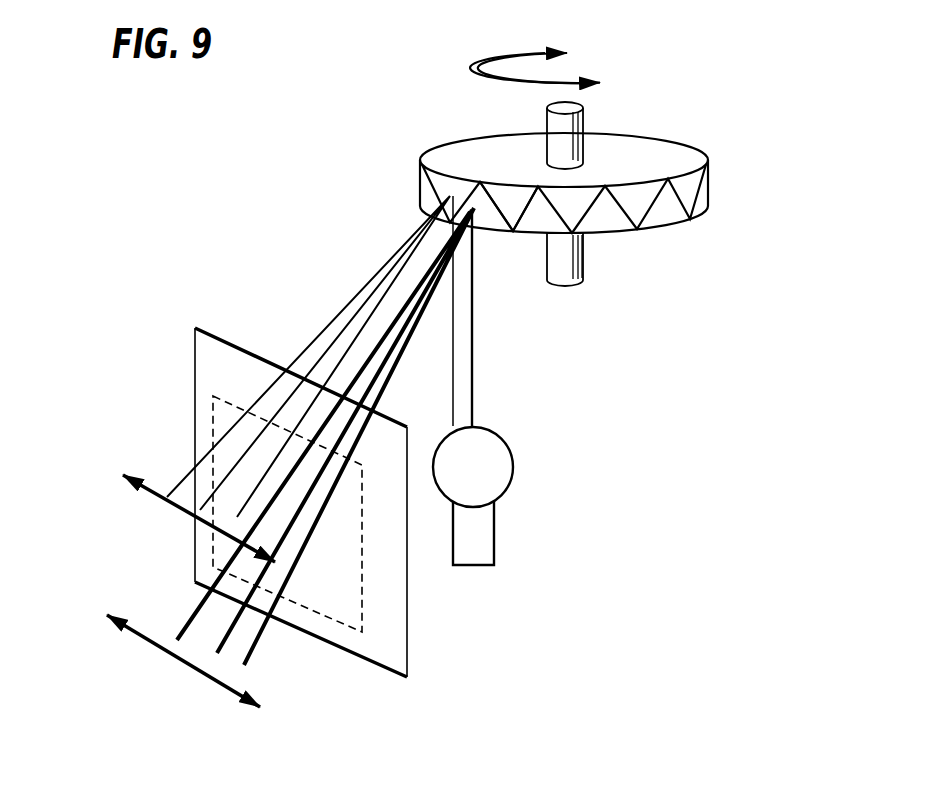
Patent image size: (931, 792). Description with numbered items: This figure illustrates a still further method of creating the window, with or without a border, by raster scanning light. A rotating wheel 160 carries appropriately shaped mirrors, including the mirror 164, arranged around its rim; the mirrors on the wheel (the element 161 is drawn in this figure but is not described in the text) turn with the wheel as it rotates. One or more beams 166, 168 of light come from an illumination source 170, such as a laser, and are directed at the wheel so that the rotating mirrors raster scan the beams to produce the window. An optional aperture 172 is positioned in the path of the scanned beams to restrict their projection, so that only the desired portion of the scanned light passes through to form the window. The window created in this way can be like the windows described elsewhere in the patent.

The rotating wheel 160 is at (637, 152).
The mirror facets 161 is at (610, 215).
The mirror 164 is at (509, 200).
The beam of light 166 is at (472, 334).
The beam of light 168 is at (453, 360).
The illumination source 170 is at (513, 470).
The aperture 172 is at (410, 630).